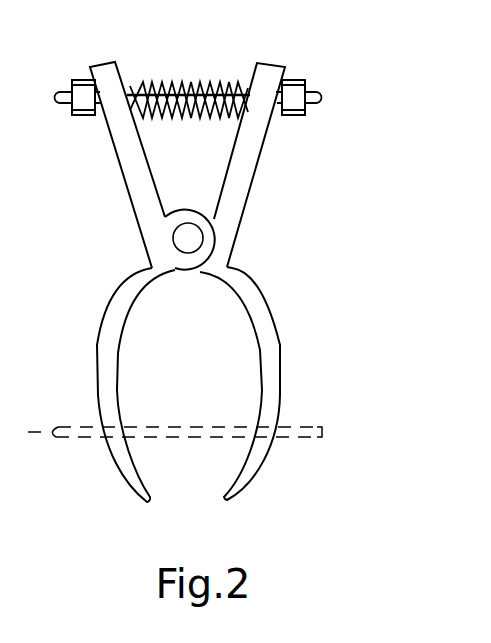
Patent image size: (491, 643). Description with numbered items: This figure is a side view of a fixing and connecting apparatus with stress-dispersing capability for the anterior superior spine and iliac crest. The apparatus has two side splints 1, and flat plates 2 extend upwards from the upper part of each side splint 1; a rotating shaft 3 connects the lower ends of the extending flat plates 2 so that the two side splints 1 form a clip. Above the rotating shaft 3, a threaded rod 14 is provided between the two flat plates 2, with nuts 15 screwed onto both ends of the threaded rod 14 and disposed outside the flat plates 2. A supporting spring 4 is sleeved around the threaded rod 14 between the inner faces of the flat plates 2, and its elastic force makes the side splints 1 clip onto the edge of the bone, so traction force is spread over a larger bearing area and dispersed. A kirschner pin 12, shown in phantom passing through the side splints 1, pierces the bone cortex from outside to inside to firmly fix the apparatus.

The side splint 1 is at (97, 375).
The flat plate 2 is at (117, 163).
The rotating shaft 3 is at (188, 238).
The supporting spring 4 is at (212, 113).
The kirschner pin 12 is at (325, 428).
The threaded rod 14 is at (307, 107).
The nut 15 is at (307, 75).